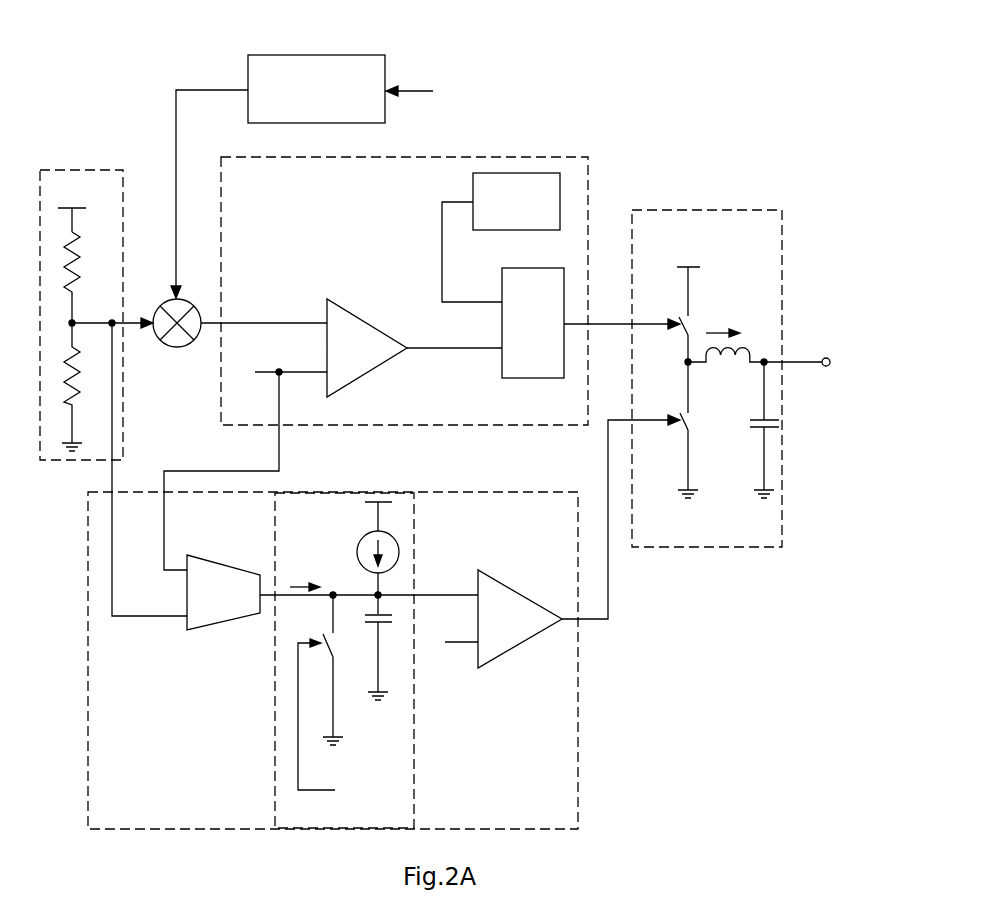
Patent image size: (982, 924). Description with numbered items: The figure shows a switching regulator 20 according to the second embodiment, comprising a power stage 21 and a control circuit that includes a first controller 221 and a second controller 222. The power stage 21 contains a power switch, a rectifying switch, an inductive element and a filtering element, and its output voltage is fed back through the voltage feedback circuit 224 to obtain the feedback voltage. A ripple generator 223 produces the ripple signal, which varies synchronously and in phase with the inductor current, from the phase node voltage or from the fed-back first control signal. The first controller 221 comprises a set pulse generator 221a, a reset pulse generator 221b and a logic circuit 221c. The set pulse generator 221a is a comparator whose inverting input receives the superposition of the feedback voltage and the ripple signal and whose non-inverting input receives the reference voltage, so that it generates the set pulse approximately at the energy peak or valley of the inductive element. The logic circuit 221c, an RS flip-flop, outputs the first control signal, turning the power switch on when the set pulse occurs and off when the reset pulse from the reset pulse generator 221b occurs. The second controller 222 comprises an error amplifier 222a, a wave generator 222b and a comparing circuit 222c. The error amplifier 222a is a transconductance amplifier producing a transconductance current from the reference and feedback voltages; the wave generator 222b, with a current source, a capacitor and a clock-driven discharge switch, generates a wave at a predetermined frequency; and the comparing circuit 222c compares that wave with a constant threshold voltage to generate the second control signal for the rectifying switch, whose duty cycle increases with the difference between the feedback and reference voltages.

The switching regulator 20 is at (157, 14).
The power stage 21 is at (750, 210).
The first controller 221 is at (278, 198).
The set pulse generator 221a is at (341, 304).
The reset pulse generator 221b is at (538, 213).
The logic circuit 221c is at (501, 364).
The second controller 222 is at (578, 719).
The error amplifier 222a is at (238, 622).
The wave generator 222b is at (318, 540).
The comparing circuit 222c is at (509, 650).
The ripple generator 223 is at (333, 99).
The voltage feedback circuit 224 is at (100, 170).